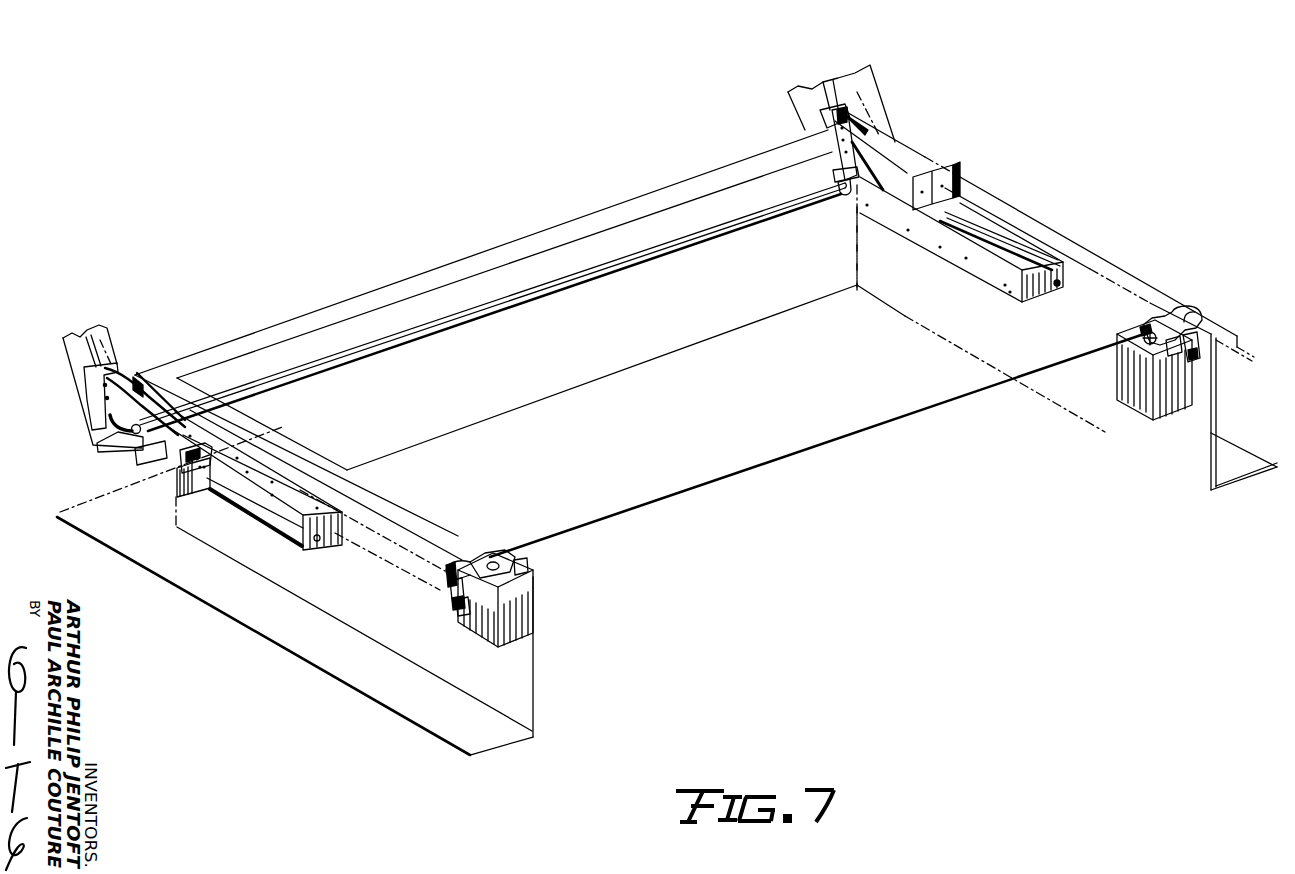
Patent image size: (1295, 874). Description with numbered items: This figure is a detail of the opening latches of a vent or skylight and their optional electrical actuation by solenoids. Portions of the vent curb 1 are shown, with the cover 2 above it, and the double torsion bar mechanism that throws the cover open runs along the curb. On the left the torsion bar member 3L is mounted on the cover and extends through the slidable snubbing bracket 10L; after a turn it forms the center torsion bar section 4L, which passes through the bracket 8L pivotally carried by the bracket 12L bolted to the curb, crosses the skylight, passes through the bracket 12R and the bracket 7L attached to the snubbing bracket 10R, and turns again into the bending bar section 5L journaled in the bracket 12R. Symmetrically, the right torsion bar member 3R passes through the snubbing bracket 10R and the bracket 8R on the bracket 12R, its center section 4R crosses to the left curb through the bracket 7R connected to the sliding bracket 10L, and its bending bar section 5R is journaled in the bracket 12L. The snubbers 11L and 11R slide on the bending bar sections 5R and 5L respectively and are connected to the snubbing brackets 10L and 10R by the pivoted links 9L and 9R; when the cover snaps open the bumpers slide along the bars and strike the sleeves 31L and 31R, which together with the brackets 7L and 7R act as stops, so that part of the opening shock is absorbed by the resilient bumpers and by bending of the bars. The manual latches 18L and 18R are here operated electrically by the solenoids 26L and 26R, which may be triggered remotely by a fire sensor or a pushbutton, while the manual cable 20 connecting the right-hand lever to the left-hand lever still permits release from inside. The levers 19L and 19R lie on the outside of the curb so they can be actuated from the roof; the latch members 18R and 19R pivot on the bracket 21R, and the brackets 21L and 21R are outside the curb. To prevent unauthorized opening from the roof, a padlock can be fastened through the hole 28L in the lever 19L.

The vent curb 1 is at (1186, 463).
The cover 2 is at (570, 204).
The left torsion bar member 3L is at (83, 352).
The right torsion bar member 3R is at (862, 90).
The left center torsion bar section 4L is at (783, 217).
The right center torsion bar section 4R is at (730, 219).
The left bending bar section 5L is at (988, 237).
The right bending bar section 5R is at (250, 515).
The left connecting bracket 7L is at (837, 146).
The right connecting bracket 7R is at (105, 445).
The left pivot bracket 8L is at (90, 425).
The right pivot bracket 8R is at (832, 176).
The left snubbing link 9L is at (135, 388).
The right snubbing link 9R is at (892, 142).
The left slidable snubbing bracket 10L is at (97, 372).
The right slidable snubbing bracket 10R is at (812, 112).
The left snubber 11L is at (188, 483).
The right snubber 11R is at (940, 183).
The left curb bracket 12L is at (267, 467).
The right curb bracket 12R is at (970, 264).
The left manual latch 18L is at (487, 550).
The right manual latch 18R is at (1195, 310).
The left latch lever 19L is at (455, 608).
The right latch lever 19R is at (1198, 357).
The manual cable 20 is at (805, 449).
The left latch bracket 21L is at (527, 570).
The right latch bracket 21R is at (1175, 348).
The left solenoid 26L is at (490, 624).
The right solenoid 26R is at (1140, 401).
The padlock hole 28L is at (458, 620).
The left sleeve 31L is at (147, 466).
The right sleeve 31R is at (888, 200).